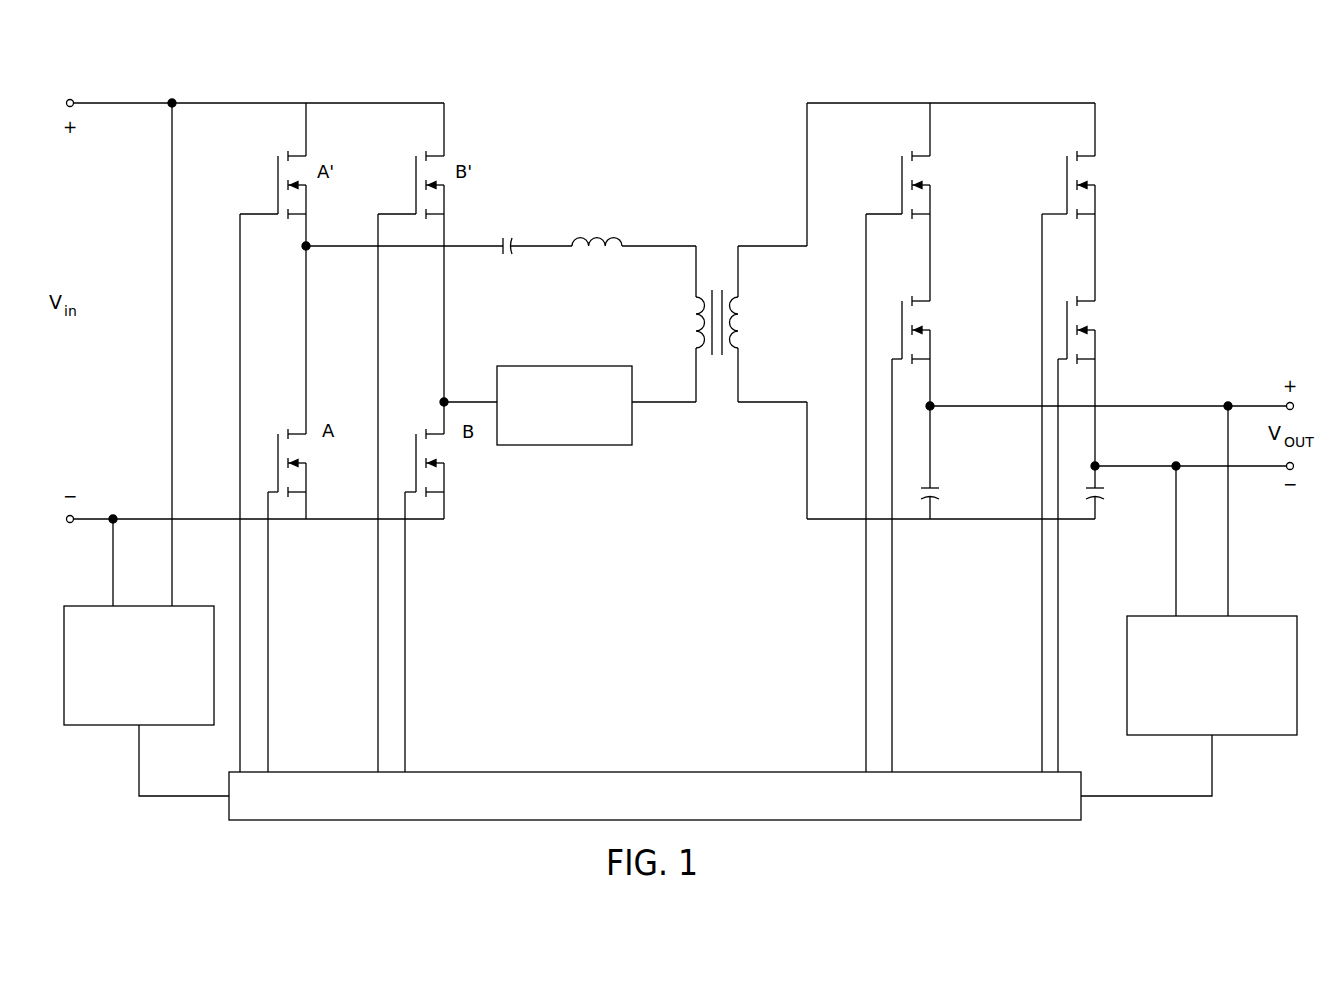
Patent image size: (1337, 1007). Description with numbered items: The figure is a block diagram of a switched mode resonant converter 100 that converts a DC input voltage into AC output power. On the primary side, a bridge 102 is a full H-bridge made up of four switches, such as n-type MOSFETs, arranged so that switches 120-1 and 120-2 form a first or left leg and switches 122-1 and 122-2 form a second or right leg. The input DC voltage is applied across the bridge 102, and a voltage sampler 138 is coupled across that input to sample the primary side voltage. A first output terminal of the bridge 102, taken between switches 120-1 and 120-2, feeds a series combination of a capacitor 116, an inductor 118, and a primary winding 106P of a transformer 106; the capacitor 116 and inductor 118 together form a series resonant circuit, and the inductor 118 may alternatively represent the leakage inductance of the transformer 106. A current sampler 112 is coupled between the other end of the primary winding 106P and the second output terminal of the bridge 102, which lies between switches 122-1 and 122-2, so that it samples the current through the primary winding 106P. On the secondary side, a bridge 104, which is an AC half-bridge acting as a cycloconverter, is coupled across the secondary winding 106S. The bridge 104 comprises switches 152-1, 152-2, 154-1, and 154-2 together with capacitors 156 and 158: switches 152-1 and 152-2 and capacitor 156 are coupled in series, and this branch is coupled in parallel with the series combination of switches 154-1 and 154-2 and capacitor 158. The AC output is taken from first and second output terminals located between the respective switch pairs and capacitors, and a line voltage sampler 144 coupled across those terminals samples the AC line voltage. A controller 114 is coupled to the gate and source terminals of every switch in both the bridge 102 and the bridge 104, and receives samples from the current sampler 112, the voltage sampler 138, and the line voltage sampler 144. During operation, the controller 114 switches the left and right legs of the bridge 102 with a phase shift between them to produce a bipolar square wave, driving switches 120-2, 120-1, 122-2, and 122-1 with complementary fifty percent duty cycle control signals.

The switched mode resonant converter 100 is at (1280, 110).
The bridge 102 is at (445, 77).
The bridge 104 is at (1095, 77).
The transformer 106 is at (718, 281).
The primary winding 106P is at (688, 323).
The secondary winding 106S is at (752, 326).
The current sampler 112 is at (556, 366).
The controller 114 is at (983, 770).
The capacitor 116 is at (513, 234).
The inductor 118 is at (593, 233).
The switch 120-1 is at (278, 168).
The switch 120-2 is at (302, 448).
The switch 122-1 is at (416, 168).
The switch 122-2 is at (440, 448).
The voltage sampler 138 is at (154, 704).
The line voltage sampler 144 is at (1227, 714).
The switch 152-1 is at (902, 168).
The switch 152-2 is at (927, 315).
The switch 154-1 is at (1067, 168).
The switch 154-2 is at (1092, 316).
The capacitor 156 is at (935, 500).
The capacitor 158 is at (1100, 500).